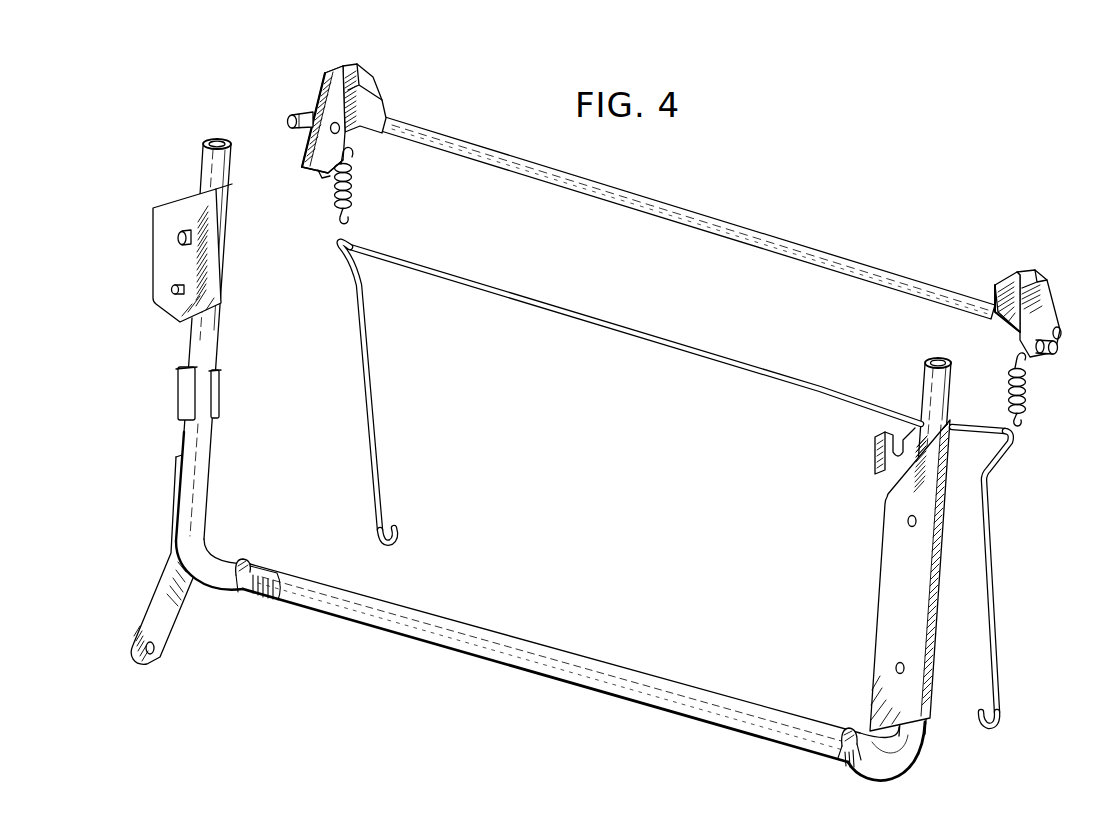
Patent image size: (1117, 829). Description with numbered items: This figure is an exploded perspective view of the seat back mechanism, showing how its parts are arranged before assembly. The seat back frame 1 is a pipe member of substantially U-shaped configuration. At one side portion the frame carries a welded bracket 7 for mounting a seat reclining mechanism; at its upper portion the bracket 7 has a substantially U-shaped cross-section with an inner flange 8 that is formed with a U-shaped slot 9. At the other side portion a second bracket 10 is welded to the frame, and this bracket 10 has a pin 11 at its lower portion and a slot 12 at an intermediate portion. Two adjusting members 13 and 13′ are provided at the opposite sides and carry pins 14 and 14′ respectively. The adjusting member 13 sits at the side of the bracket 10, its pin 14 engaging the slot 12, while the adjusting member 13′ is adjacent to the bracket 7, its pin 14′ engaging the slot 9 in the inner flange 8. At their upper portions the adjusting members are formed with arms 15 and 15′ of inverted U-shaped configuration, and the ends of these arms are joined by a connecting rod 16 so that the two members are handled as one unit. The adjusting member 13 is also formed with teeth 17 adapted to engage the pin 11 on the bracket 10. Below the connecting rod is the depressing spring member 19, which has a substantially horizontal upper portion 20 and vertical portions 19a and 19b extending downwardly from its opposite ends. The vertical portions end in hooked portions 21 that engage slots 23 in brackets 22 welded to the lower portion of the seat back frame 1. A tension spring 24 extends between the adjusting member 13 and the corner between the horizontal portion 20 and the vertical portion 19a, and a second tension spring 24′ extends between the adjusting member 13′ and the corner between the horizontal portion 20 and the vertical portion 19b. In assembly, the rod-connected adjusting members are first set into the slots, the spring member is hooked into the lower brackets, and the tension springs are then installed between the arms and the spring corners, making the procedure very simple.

The seat back frame 1 is at (458, 646).
The bracket 7 is at (923, 617).
The inner flange 8 is at (892, 472).
The U-shaped slot 9 is at (892, 436).
The second bracket 10 is at (166, 268).
The pin 11 is at (173, 289).
The slot 12 is at (178, 240).
The adjusting member 13 is at (317, 100).
The adjusting member 13′ is at (1040, 309).
The pin 14 is at (298, 128).
The pin 14′ is at (1059, 348).
The arm 15 is at (357, 65).
The arm 15′ is at (1020, 270).
The connecting rod 16 is at (605, 190).
The teeth 17 is at (313, 174).
The depressing spring member 19 is at (703, 484).
The vertical portion 19a is at (373, 392).
The vertical portion 19b is at (992, 555).
The horizontal upper portion 20 is at (620, 330).
The hooked portions 21 is at (393, 532).
The brackets 22 is at (243, 590).
The slots 23 is at (251, 566).
The tension spring 24 is at (354, 184).
The tension spring 24′ is at (1026, 393).